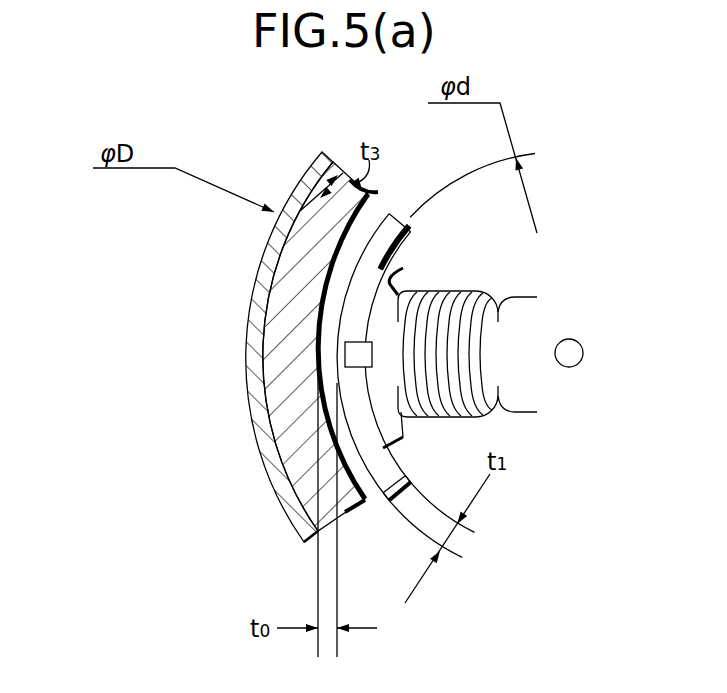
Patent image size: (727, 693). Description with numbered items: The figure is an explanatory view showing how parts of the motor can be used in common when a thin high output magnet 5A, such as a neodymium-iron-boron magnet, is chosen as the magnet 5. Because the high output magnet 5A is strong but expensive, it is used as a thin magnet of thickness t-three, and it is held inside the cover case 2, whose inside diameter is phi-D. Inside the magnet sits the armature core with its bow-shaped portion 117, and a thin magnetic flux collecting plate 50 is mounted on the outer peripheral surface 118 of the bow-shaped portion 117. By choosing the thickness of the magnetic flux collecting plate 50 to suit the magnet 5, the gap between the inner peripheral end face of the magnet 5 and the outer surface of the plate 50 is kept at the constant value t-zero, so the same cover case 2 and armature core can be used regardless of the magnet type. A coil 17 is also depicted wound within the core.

The cover case 2 is at (209, 342).
The magnet 5 is at (284, 342).
The high output magnet 5A is at (302, 197).
The magnetic flux collecting plate 50 is at (340, 296).
The bow-shaped portion 117 is at (405, 278).
The outer peripheral surface 118 is at (411, 217).
The coil 17 is at (478, 284).